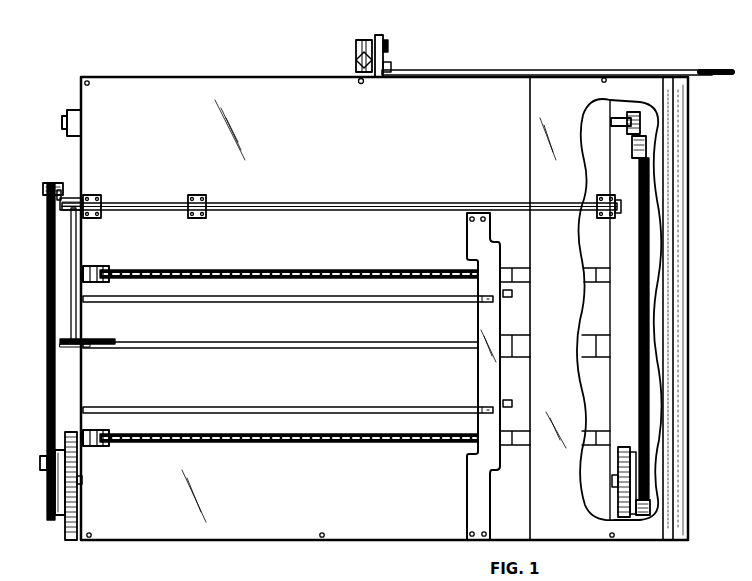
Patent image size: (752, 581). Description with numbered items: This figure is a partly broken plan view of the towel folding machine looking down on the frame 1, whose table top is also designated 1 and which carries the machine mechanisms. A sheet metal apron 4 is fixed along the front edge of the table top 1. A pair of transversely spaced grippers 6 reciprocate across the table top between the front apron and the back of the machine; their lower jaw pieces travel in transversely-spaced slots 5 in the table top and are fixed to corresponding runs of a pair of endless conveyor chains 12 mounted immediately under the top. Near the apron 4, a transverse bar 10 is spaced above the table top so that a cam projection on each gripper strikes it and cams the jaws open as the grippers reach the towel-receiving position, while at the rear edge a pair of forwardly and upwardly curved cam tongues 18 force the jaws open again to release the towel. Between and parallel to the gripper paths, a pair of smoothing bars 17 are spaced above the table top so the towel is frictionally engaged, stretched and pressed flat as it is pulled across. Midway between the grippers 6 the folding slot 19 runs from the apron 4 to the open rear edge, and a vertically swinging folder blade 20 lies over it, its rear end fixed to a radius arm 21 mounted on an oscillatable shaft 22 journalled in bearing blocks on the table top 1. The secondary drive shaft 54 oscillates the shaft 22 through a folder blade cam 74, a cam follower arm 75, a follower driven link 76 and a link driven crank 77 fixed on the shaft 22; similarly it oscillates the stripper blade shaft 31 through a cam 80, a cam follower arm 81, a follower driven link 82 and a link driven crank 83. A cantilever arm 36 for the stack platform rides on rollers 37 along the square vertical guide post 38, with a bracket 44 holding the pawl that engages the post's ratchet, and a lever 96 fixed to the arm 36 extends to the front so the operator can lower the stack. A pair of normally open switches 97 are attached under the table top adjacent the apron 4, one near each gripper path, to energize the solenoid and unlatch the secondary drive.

The frame 1 is at (297, 160).
The sheet metal apron 4 is at (678, 180).
The slots 5 is at (382, 270).
The grippers 6 is at (470, 273).
The transverse bar 10 is at (489, 476).
The endless conveyor chains 12 is at (446, 443).
The smoothing bars 17 is at (258, 300).
The cam tongues 18 is at (100, 266).
The folding slot 19 is at (151, 350).
The folder blade 20 is at (348, 350).
The radius arm 21 is at (78, 250).
The oscillatable shaft 22 is at (366, 204).
The stripper blade shaft 31 is at (624, 118).
The cantilever arm 36 is at (380, 45).
The rollers 37 is at (362, 40).
The guide post 38 is at (357, 63).
The bracket 44 is at (386, 70).
The secondary drive shaft 54 is at (82, 480).
The folder blade cam 74 is at (64, 535).
The cam follower arm 75 is at (50, 490).
The follower driven link 76 is at (47, 376).
The link driven crank 77 is at (66, 182).
The cam 80 is at (624, 447).
The cam follower arm 81 is at (636, 510).
The follower driven link 82 is at (640, 348).
The link driven crank 83 is at (634, 148).
The lever 96 is at (720, 66).
The switches 97 is at (512, 293).